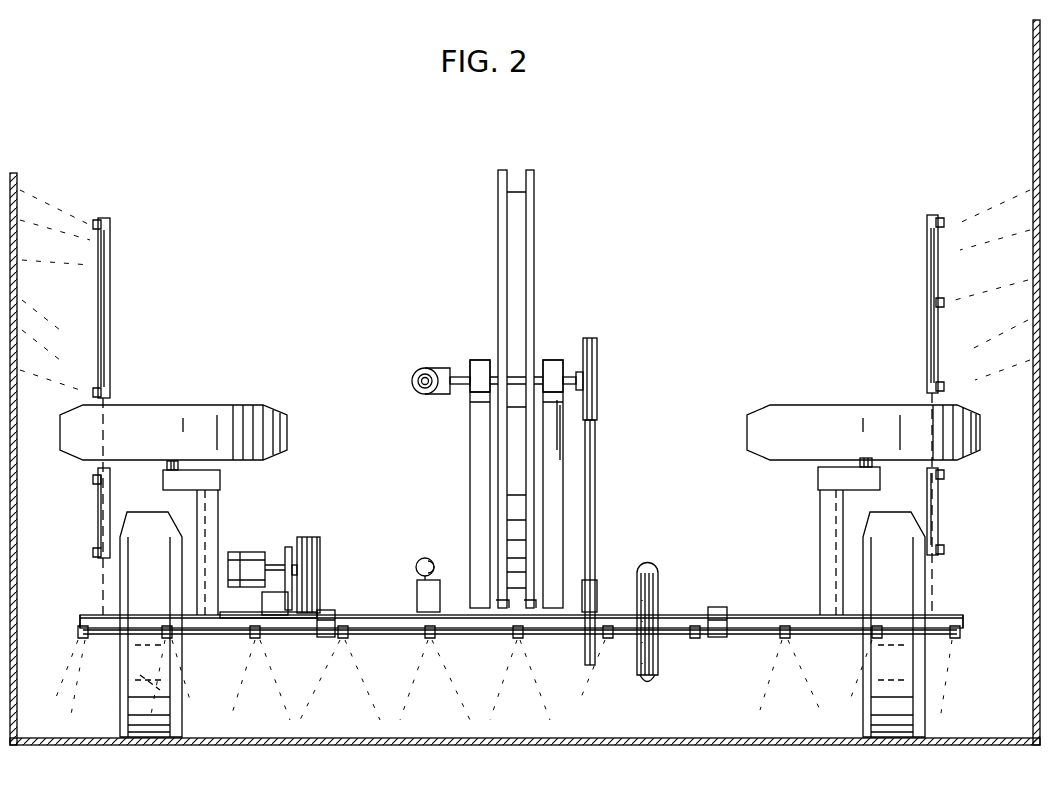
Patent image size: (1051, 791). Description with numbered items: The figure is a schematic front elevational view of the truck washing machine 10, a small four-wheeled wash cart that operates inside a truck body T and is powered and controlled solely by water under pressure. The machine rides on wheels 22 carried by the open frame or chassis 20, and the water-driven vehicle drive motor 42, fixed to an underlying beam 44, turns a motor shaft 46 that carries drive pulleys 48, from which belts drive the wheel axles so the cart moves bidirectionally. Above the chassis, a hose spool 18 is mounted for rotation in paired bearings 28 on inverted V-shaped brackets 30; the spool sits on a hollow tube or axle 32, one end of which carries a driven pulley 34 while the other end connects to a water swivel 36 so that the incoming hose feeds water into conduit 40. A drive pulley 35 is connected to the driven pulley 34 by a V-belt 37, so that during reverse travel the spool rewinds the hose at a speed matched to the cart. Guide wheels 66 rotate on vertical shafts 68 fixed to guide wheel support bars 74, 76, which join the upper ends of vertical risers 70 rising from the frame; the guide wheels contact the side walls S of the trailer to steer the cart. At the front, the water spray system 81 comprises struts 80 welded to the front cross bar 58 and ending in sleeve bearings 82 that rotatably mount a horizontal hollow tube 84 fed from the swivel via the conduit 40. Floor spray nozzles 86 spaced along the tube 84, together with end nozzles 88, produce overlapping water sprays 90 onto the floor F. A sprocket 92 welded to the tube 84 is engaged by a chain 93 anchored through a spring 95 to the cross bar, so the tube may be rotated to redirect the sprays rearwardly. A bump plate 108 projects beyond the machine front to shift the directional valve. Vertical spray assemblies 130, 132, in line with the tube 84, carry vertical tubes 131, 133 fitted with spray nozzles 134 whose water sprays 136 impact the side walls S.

The truck washing machine 10 is at (712, 158).
The spool 18 is at (550, 196).
The open frame or chassis 20 is at (792, 582).
The wheels 22 is at (182, 735).
The journals or bearings 28 is at (478, 360).
The brackets 30 is at (478, 461).
The hollow tube or axle 32 is at (494, 370).
The driven pulley 34 is at (598, 366).
The drive pulley 35 is at (596, 580).
The water swivel 36 is at (425, 366).
The V-belt 37 is at (596, 480).
The conduit 40 is at (414, 382).
The vehicle drive motor 42 is at (243, 552).
The beam 44 is at (262, 603).
The motor shaft 46 is at (297, 568).
The drive pulleys 48 is at (308, 537).
The front cross bar 58 is at (598, 613).
The guide wheels 66 is at (218, 415).
The shafts 68 is at (167, 467).
The vertical risers 70 is at (210, 540).
The guide wheel support bar 74 is at (880, 482).
The guide wheel support bar 76 is at (163, 485).
The struts 80 is at (328, 610).
The water spray system 81 is at (570, 678).
The sleeve bearings 82 is at (324, 638).
The hollow pipe or tube 84 is at (392, 628).
The floor spray nozzles 86 is at (518, 640).
The additional spray nozzles 88 is at (80, 620).
The water sprays 90 is at (650, 565).
The sprocket 92 is at (638, 655).
The chain 93 is at (650, 598).
The spring 95 is at (652, 685).
The bump plate 108 is at (432, 558).
The vertical spray assembly 130 is at (118, 278).
The vertical tube 131 is at (110, 242).
The vertical spray assembly 132 is at (119, 524).
The vertical tube 133 is at (110, 470).
The spray nozzles 134 is at (100, 305).
The water sprays 136 is at (40, 390).
The side walls S is at (20, 182).
The truck body T is at (960, 745).
The floor F is at (500, 738).